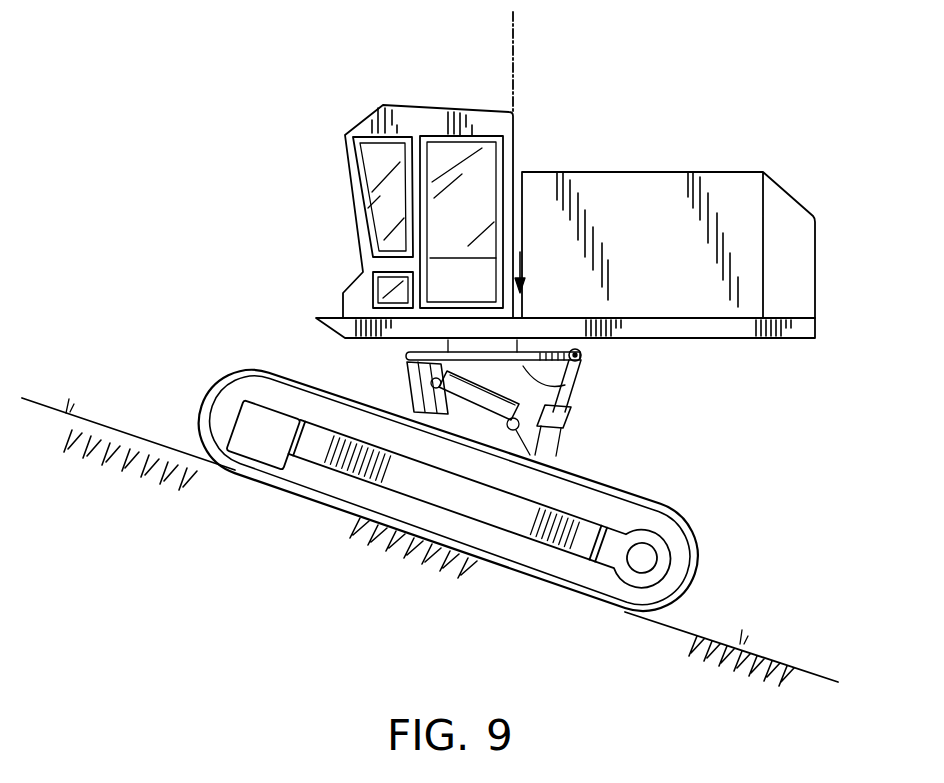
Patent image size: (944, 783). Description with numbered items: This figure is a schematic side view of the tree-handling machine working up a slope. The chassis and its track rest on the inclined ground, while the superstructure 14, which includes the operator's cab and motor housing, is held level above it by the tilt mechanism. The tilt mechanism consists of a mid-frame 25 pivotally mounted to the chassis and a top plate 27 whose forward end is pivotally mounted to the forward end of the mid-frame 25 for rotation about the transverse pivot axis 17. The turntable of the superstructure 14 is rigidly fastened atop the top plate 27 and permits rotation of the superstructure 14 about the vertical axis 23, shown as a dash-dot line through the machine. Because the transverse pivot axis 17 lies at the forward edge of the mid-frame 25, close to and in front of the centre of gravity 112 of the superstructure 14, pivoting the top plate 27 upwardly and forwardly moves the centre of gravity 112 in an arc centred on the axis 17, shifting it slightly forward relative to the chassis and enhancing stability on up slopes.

The superstructure 14 is at (835, 105).
The transverse pivot axis 17 is at (410, 373).
The vertical axis 23 is at (513, 32).
The mid-frame 25 is at (563, 407).
The top plate 27 is at (573, 381).
The centre of gravity 112 is at (518, 258).